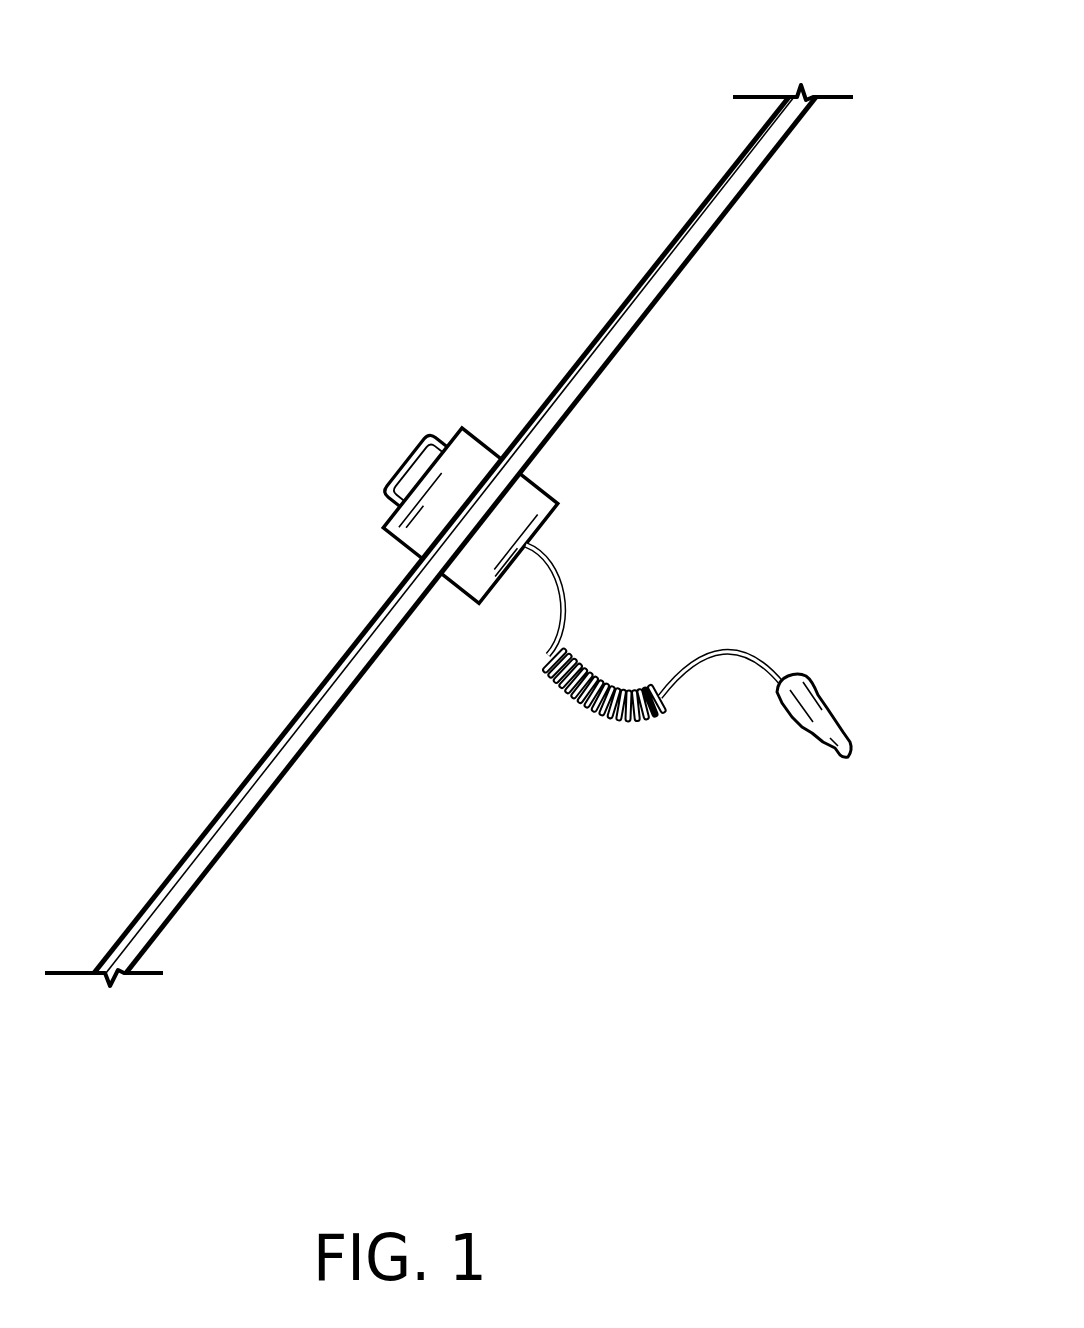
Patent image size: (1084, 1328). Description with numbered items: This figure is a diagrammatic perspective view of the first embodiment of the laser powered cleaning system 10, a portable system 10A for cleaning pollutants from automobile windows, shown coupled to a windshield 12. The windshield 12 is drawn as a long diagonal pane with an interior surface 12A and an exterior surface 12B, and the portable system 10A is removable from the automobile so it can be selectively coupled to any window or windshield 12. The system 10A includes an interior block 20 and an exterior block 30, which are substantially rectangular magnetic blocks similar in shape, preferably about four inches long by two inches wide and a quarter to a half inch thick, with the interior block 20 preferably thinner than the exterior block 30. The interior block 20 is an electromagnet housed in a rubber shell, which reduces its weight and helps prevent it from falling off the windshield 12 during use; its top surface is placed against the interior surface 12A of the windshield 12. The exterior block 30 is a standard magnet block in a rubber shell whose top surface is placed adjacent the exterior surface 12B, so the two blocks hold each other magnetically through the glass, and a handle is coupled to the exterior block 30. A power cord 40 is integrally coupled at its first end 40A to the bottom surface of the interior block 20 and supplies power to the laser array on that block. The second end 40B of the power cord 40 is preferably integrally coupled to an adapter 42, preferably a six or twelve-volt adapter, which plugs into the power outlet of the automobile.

The laser powered cleaning system 10 is at (792, 907).
The portable system 10A is at (717, 480).
The windshield 12 is at (479, 494).
The interior surface 12A is at (747, 188).
The exterior surface 12B is at (703, 198).
The interior block 20 is at (467, 593).
The exterior block 30 is at (390, 496).
The power cord 40 is at (654, 668).
The first end 40A is at (565, 590).
The second end 40B is at (757, 667).
The adapter 42 is at (838, 758).